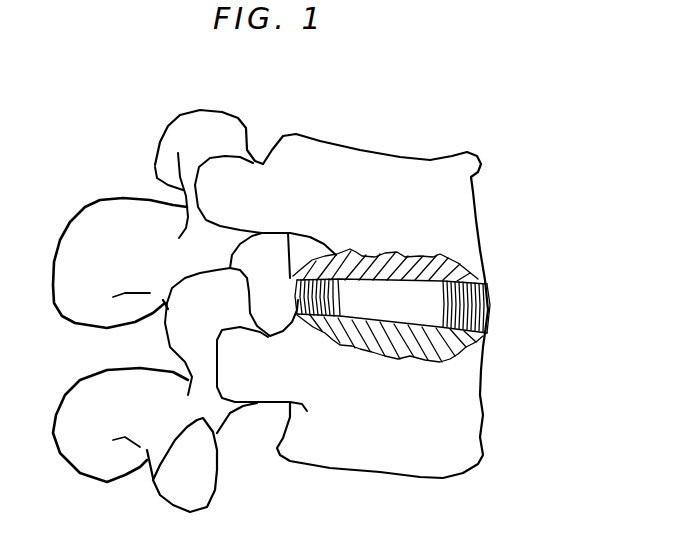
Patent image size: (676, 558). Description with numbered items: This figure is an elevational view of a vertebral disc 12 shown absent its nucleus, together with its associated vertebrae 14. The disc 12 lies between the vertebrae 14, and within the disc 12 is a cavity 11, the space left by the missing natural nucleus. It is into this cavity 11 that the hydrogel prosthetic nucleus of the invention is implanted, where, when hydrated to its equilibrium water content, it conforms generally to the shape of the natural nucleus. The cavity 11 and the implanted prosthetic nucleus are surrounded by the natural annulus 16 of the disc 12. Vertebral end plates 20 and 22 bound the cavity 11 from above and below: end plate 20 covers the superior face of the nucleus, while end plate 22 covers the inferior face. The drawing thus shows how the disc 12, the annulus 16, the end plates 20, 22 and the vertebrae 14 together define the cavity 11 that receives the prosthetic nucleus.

The cavity 11 is at (417, 307).
The disc 12 is at (435, 304).
The vertebrae 14 is at (458, 183).
The natural annulus 16 is at (298, 278).
The vertebral end plate 20 is at (465, 260).
The vertebral end plate 22 is at (450, 350).